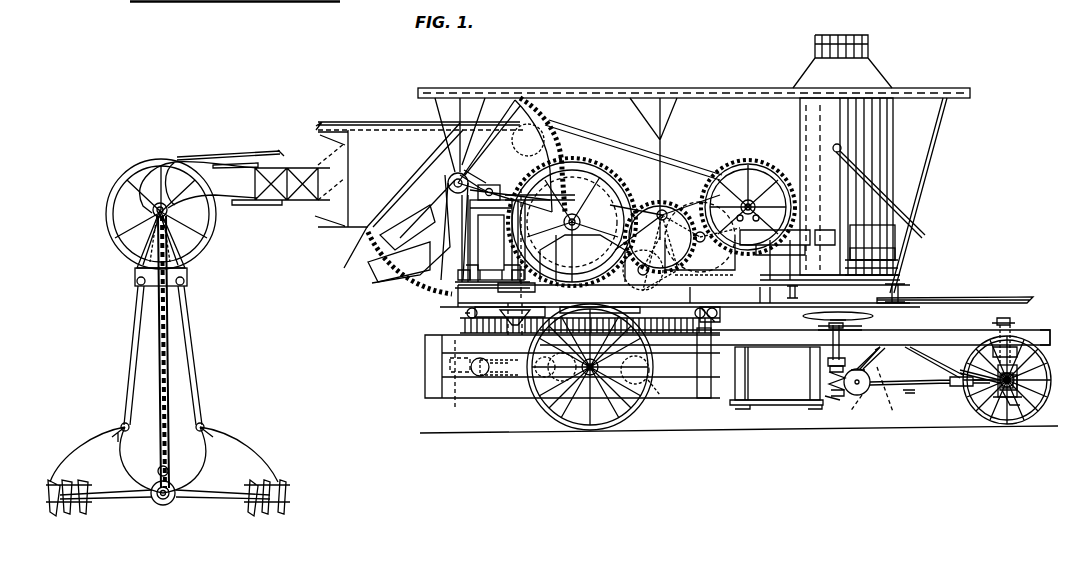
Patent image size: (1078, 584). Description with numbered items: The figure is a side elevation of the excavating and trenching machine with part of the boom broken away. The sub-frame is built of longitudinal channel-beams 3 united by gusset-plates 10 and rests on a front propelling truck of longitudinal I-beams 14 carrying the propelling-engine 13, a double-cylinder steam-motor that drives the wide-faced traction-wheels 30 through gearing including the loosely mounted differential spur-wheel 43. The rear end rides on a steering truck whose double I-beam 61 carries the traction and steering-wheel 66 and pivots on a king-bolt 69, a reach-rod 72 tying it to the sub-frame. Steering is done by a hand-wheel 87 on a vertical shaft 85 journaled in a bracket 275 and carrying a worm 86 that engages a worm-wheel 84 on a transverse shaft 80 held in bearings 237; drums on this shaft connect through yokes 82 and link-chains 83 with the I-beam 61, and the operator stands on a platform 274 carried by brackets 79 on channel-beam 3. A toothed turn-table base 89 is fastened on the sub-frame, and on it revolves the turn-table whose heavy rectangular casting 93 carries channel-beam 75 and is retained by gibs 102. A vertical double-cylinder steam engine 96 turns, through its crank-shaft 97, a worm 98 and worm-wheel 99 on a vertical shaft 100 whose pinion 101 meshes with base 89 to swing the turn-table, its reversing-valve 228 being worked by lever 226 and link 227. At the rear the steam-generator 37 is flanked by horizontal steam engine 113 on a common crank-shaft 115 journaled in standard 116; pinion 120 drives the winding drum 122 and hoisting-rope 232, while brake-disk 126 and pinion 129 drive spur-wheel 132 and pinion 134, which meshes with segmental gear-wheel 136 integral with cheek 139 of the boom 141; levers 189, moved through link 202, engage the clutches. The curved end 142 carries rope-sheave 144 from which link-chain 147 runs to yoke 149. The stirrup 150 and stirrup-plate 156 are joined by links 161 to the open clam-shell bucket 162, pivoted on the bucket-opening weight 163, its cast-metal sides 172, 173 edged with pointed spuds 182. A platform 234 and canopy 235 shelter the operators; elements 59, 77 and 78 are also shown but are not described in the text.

The longitudinal channel-beam 3 is at (795, 339).
The gusset-plate 10 is at (1040, 329).
The propelling-engine 13 is at (572, 379).
The longitudinal I-beam 14 is at (693, 363).
The driving traction-wheel 30 is at (547, 412).
The steam generator 37 is at (870, 164).
The spur-wheel 43 is at (615, 383).
The axle 59 is at (520, 370).
The double I-beam 61 is at (1020, 382).
The traction and steering-wheel 66 is at (1042, 402).
The king-bolt 69 is at (997, 318).
The reach-rod 72 is at (926, 360).
The channel-beam 75 is at (680, 295).
The platform bracket 77 is at (900, 290).
The platform support 78 is at (806, 292).
The bracket 79 is at (742, 374).
The shaft 80 is at (876, 382).
The yoke 82 is at (968, 403).
The link-chain 83 is at (912, 395).
The worm-wheel 84 is at (862, 396).
The vertical shaft 85 is at (842, 339).
The worm 86 is at (836, 392).
The hand-wheel 87 is at (873, 317).
The turn-table base 89 is at (460, 323).
The turn-table casting 93 is at (440, 316).
The vertical steam engine 96 is at (491, 240).
The crank-shaft 97 is at (460, 289).
The worm 98 is at (536, 241).
The worm-wheel 99 is at (530, 262).
The vertical shaft 100 is at (522, 296).
The pinion 101 is at (518, 338).
The gib 102 is at (540, 306).
The horizontal steam engine 113 is at (871, 250).
The common crank-shaft 115 is at (781, 247).
The standard 116 is at (582, 258).
The pinion 120 is at (752, 163).
The winding drum 122 is at (750, 193).
The brake-disk 126 is at (660, 204).
The pinion 129 is at (648, 224).
The spur-wheel 132 is at (600, 172).
The pinion 134 is at (572, 226).
The segmental gear-wheel 136 is at (397, 263).
The cheek plate 139 is at (389, 203).
The boom 141 is at (279, 181).
The curved outer-end 142 is at (198, 189).
The rope-sheave 144 is at (106, 211).
The link-chain 147 is at (174, 352).
The yoke 149 is at (158, 470).
The stirrup 150 is at (136, 262).
The stirrup-plate 156 is at (134, 276).
The link 161 is at (202, 357).
The clam-shell bucket 162 is at (171, 509).
The bucket-opening weight 163 is at (153, 505).
The cast-metal side 172 is at (220, 458).
The cast-metal side 173 is at (106, 458).
The spud 182 is at (168, 506).
The lever 189 is at (646, 252).
The link 202 is at (700, 237).
The lever 226 is at (462, 176).
The link 227 is at (486, 179).
The reversing-valve 228 is at (511, 155).
The hoisting-rope 232 is at (351, 129).
The platform 234 is at (1012, 289).
The canopy 235 is at (694, 121).
The bearing 237 is at (882, 397).
The platform 274 is at (776, 411).
The bracket 275 is at (818, 327).